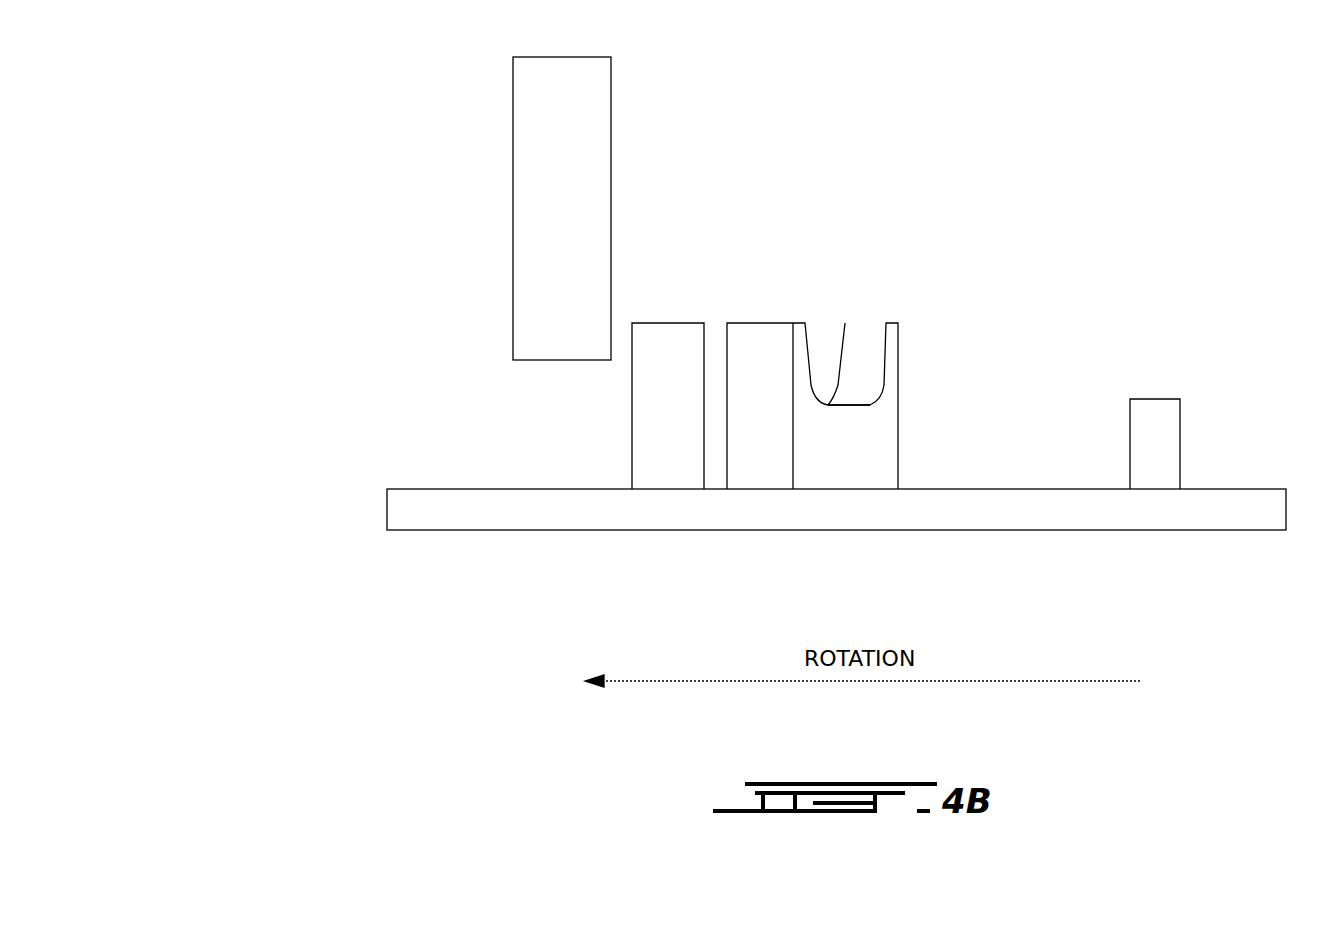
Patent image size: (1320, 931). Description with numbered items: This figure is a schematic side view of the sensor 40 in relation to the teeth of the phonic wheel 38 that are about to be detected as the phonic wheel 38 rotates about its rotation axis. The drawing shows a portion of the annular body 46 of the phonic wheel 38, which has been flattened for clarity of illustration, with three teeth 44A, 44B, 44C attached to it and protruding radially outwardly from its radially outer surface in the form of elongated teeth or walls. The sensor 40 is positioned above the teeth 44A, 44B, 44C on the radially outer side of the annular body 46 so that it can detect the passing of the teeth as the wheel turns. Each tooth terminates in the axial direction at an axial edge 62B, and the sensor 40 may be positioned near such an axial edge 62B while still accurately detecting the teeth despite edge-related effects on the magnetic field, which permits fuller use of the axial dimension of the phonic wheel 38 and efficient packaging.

The phonic wheel 38 is at (318, 460).
The sensor 40 is at (513, 208).
The tooth 44A is at (632, 426).
The tooth 44B is at (898, 400).
The tooth 44C is at (1180, 440).
The annular body 46 is at (1217, 510).
The axial edge 62B is at (762, 350).